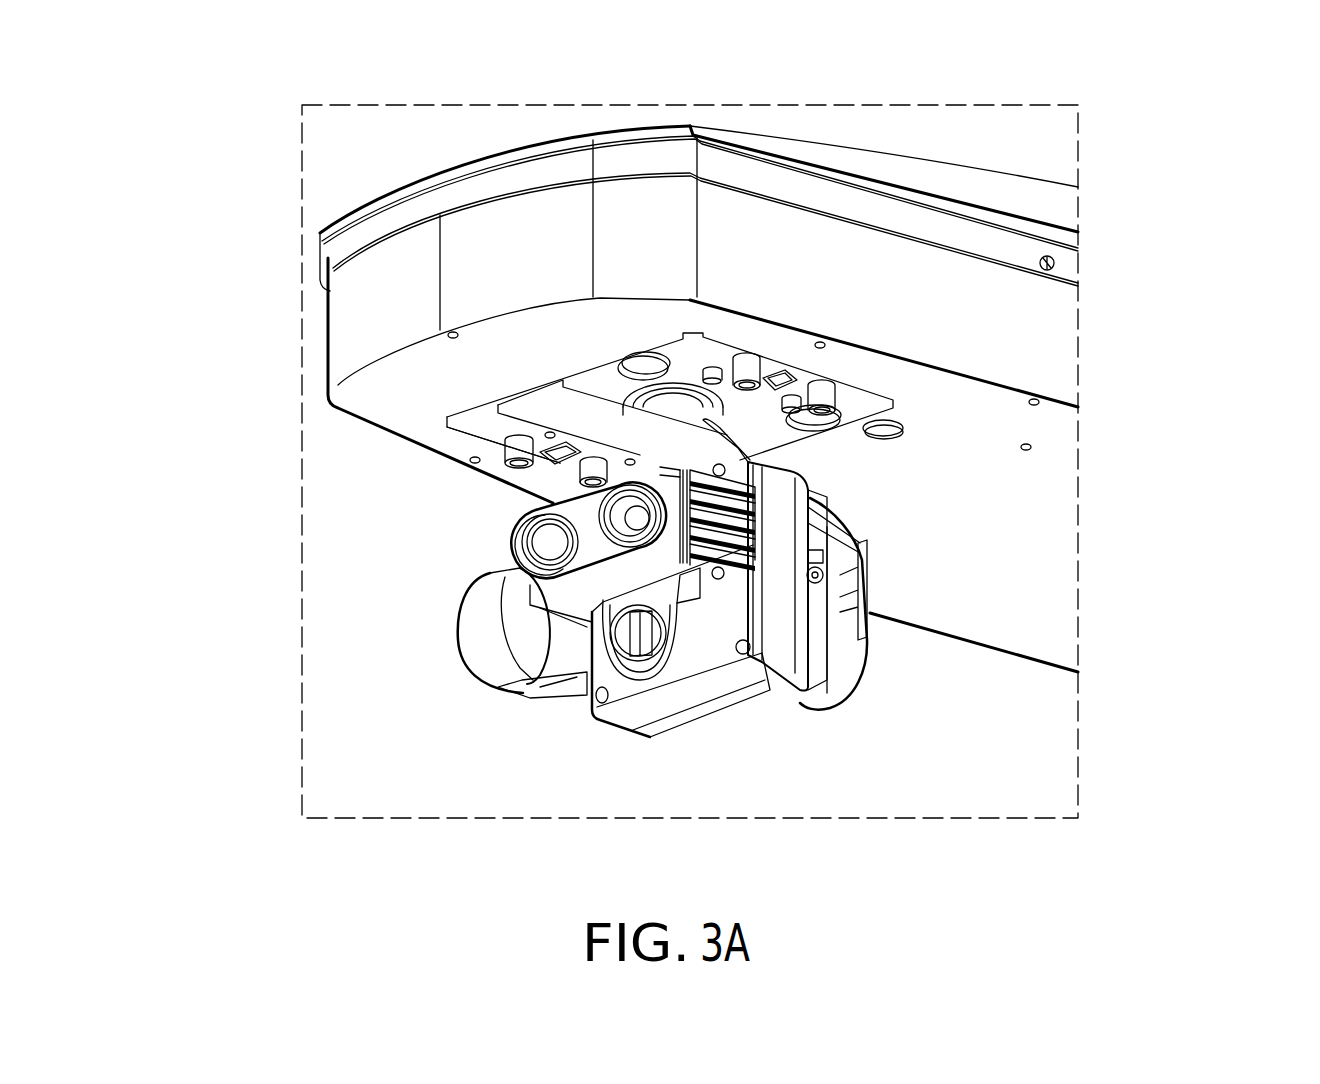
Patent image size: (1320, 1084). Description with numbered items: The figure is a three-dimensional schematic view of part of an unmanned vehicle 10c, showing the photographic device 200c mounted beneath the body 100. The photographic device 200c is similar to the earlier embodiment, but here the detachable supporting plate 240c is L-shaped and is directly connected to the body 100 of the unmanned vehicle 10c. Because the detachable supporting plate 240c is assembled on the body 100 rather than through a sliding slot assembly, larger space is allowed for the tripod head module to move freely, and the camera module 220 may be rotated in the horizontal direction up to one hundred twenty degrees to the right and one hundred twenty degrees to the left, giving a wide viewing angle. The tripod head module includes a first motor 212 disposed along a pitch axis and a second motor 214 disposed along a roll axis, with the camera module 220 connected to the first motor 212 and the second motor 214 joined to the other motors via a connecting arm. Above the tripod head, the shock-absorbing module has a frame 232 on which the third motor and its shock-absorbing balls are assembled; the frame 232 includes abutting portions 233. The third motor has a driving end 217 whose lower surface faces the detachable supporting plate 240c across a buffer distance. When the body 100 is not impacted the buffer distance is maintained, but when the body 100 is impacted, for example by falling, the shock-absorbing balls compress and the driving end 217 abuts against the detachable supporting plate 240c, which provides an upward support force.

The unmanned vehicle 10c is at (1272, 882).
The body 100 is at (355, 400).
The photographic device 200c is at (452, 676).
The first motor 212 is at (485, 636).
The second motor 214 is at (843, 675).
The driving end 217 is at (704, 427).
The camera module 220 is at (718, 650).
The frame 232 is at (860, 405).
The abutting portion 233 is at (750, 368).
The detachable supporting plate 240c is at (540, 413).